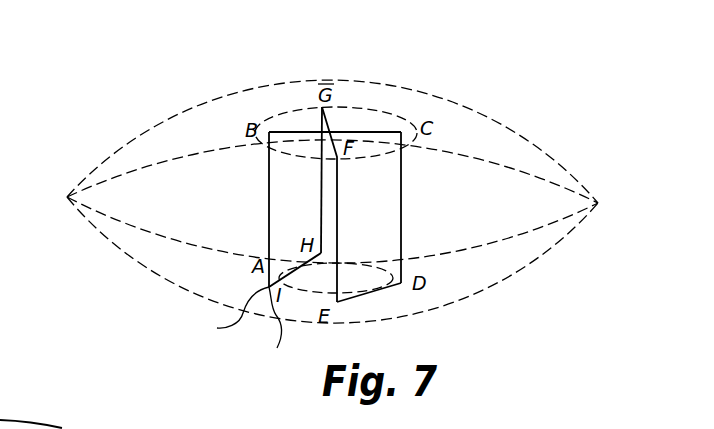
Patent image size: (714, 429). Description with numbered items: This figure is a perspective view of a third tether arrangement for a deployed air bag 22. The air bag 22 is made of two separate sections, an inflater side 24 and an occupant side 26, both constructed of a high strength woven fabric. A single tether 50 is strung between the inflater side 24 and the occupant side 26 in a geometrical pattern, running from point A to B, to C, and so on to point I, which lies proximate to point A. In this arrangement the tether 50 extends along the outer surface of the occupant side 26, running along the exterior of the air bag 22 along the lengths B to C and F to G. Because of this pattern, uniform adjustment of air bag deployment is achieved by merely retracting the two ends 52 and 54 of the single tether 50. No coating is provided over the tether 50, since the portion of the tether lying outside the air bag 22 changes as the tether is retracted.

The air bag 22 is at (351, 185).
The inflater side 24 is at (480, 293).
The occupant side 26 is at (520, 133).
The single tether 50 is at (401, 213).
The tether end 52 is at (269, 287).
The tether end 54 is at (278, 316).